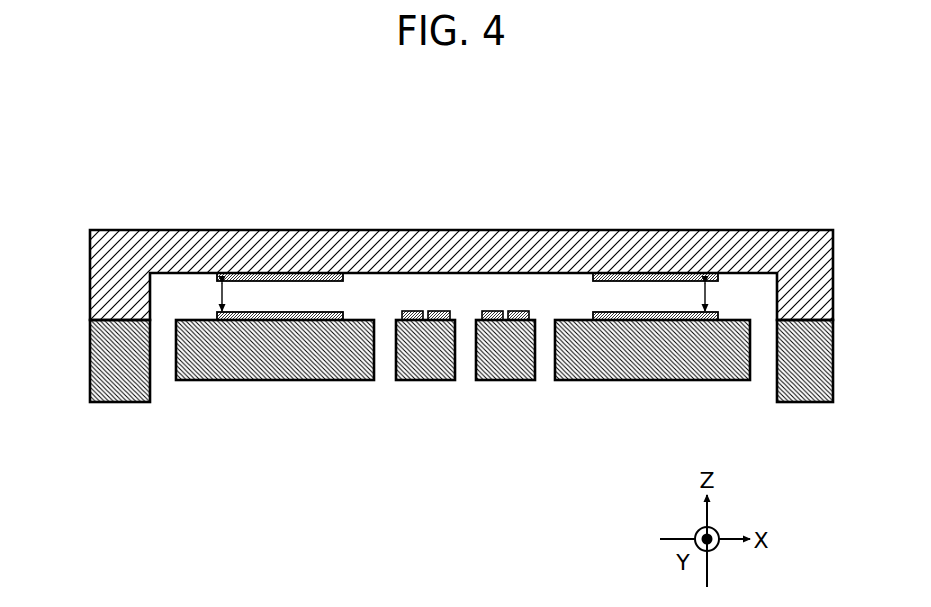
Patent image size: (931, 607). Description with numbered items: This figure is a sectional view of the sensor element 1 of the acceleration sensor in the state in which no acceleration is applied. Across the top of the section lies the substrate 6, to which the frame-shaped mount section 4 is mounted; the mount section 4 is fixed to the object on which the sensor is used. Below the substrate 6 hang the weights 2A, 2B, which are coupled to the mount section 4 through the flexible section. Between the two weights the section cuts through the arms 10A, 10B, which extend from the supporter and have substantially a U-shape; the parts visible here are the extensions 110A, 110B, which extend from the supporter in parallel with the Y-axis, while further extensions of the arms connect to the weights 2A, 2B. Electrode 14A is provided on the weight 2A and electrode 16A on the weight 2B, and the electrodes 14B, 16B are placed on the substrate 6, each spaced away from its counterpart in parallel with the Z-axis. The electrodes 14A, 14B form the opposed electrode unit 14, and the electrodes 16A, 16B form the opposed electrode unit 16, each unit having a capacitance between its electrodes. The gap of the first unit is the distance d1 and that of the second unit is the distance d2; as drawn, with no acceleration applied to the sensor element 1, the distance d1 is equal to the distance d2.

The sensor element 1 is at (770, 165).
The substrate 6 is at (718, 238).
The mount section 4 is at (135, 383).
The weight 2A is at (283, 367).
The weight 2B is at (627, 365).
The extension 110A is at (425, 365).
The extension 110B is at (510, 365).
The arm 10A is at (424, 393).
The arm 10B is at (505, 393).
The opposed electrode unit 14 is at (287, 228).
The electrode 14A is at (271, 312).
The electrode 14B is at (312, 273).
The opposed electrode unit 16 is at (635, 228).
The electrode 16A is at (608, 312).
The electrode 16B is at (650, 273).
The distance d1 is at (206, 296).
The distance d2 is at (722, 296).